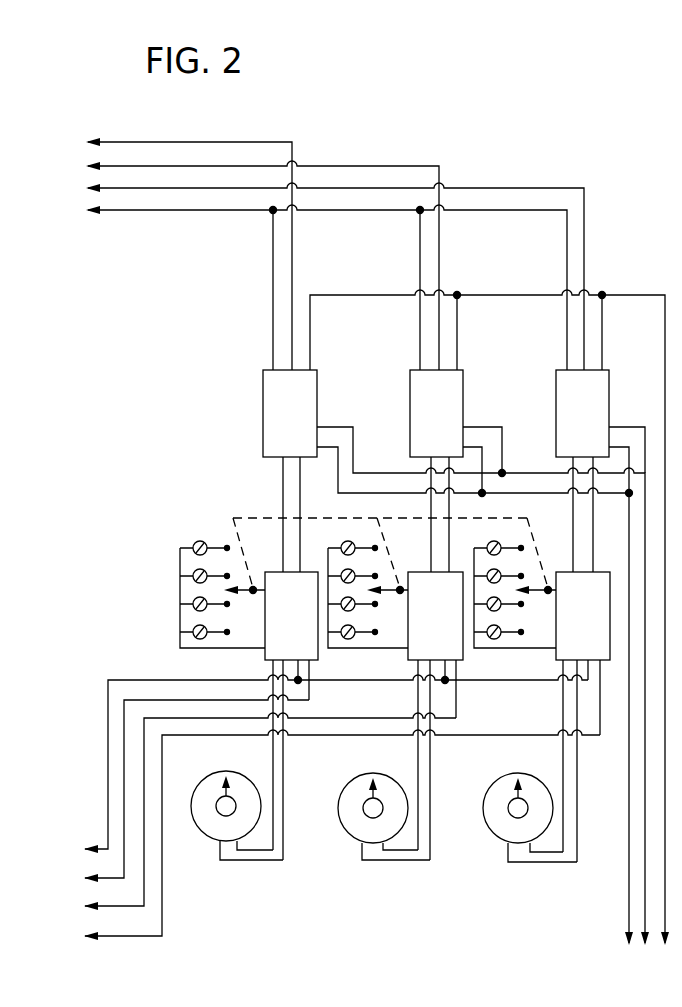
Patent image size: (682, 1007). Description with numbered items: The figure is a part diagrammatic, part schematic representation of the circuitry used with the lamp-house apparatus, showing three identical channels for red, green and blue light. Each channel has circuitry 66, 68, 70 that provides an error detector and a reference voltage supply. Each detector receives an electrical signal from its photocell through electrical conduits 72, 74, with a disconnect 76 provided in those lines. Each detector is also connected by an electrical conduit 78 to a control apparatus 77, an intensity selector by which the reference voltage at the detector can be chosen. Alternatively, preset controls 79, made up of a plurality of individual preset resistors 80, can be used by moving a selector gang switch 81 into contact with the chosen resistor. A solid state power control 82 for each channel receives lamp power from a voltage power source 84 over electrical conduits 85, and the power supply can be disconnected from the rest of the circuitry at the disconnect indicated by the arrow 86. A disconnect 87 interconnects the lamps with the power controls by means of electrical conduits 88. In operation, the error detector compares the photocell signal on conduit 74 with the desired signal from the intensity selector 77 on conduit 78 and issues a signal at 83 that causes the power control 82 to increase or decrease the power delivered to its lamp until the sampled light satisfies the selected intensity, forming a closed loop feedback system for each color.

The error detector and reference voltage supply circuitry 66 is at (305, 628).
The error detector and reference voltage supply circuitry 68 is at (450, 628).
The error detector and reference voltage supply circuitry 70 is at (597, 628).
The electrical conduit 72 is at (107, 720).
The electrical conduit 74 is at (123, 793).
The disconnect 76 is at (72, 856).
The control apparatus 77 is at (210, 843).
The electrical conduit 78 is at (283, 862).
The preset controls 79 is at (326, 576).
The preset resistor 80 is at (194, 542).
The selector gang switch 81 is at (246, 592).
The solid state power control 82 is at (318, 380).
The error detector output signal 83 is at (282, 476).
The voltage power source 84 is at (496, 577).
The electrical conduits 85 is at (355, 441).
The disconnect 86 is at (620, 950).
The disconnect 87 is at (72, 206).
The electrical conduits 88 is at (272, 255).